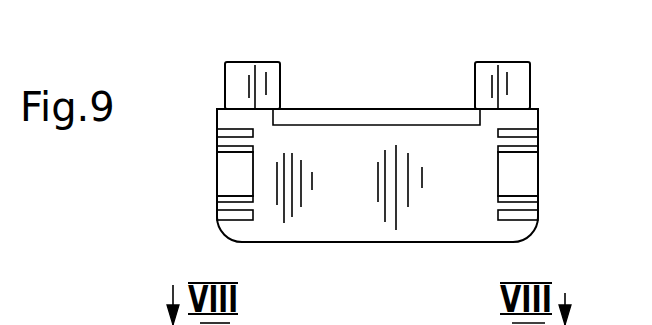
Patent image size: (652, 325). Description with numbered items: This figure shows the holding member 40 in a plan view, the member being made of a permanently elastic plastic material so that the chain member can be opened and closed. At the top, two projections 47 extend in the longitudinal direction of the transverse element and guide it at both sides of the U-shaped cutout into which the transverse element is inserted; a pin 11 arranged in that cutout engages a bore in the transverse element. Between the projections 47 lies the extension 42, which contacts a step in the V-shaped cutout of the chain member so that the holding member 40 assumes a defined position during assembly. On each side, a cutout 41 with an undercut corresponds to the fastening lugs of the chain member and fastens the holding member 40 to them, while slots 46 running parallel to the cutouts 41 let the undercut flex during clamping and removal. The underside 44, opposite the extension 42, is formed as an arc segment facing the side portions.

The holding member 40 is at (553, 122).
The cutout 41 is at (528, 165).
The extension 42 is at (331, 118).
The underside 44 is at (453, 233).
The slots 46 is at (228, 133).
The projections 47 is at (242, 82).
The pin 11 is at (22, 312).